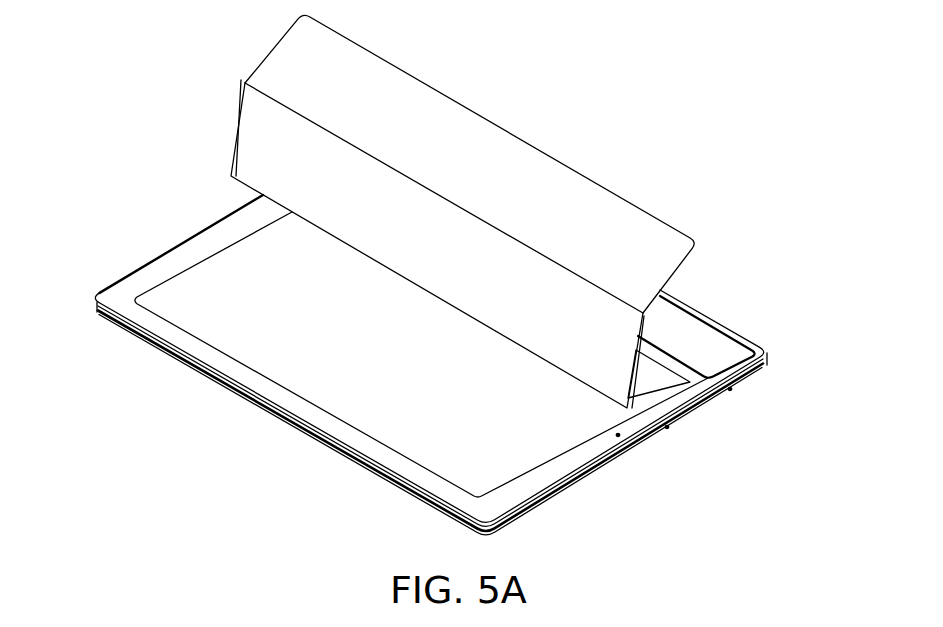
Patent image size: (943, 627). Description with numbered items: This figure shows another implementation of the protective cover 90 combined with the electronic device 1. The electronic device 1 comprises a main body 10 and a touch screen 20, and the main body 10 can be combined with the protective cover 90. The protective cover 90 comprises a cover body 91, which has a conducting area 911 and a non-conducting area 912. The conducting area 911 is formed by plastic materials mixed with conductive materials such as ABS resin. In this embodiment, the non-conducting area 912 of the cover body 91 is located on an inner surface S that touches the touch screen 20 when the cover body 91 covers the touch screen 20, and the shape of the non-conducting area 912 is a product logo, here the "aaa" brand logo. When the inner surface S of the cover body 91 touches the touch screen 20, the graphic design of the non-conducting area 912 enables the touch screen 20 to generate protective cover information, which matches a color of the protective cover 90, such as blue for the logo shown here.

The electronic device 1 is at (331, 474).
The main body 10 is at (167, 360).
The touch screen 20 is at (202, 272).
The protective cover 90 is at (690, 112).
The cover body 91 is at (673, 275).
The conducting area 911 is at (280, 50).
The non-conducting area 912 is at (410, 271).
The inner surface S is at (222, 175).